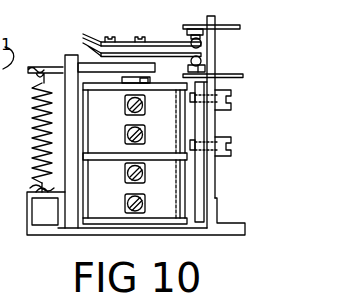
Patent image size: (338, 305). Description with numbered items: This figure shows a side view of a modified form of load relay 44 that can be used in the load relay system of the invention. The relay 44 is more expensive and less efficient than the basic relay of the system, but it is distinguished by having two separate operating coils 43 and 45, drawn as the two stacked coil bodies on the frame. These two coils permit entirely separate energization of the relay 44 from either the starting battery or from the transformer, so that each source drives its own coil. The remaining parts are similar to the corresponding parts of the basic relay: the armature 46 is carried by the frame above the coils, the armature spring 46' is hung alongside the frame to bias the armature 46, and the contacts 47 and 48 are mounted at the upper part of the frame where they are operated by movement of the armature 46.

The operating coil 43 is at (167, 124).
The load relay 44 is at (222, 170).
The operating coil 45 is at (162, 194).
The armature 46 is at (97, 49).
The armature spring 46' is at (26, 133).
The contact 47 is at (203, 33).
The contact 48 is at (203, 60).